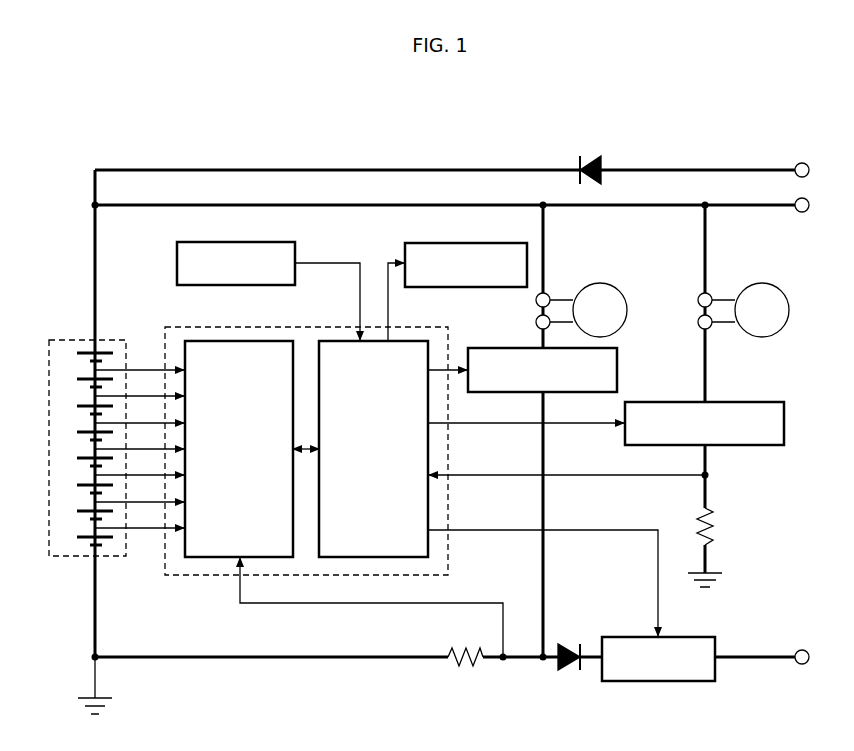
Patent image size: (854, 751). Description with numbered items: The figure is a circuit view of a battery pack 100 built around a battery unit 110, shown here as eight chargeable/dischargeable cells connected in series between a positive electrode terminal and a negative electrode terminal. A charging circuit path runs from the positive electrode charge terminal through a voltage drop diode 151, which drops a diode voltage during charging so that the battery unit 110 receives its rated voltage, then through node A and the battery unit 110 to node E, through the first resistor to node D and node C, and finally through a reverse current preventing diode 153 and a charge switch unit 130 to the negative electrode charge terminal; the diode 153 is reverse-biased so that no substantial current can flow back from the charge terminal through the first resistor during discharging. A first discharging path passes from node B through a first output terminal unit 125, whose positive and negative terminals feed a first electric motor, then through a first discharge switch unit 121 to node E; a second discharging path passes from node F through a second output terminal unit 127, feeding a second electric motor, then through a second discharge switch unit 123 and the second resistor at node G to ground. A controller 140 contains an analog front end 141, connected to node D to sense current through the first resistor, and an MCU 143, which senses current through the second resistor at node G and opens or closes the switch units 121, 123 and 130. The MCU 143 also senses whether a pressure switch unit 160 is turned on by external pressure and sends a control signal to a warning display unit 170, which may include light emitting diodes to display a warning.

The battery pack 100 is at (89, 142).
The battery unit 110 is at (60, 340).
The first discharge switch unit 121 is at (618, 370).
The second discharge switch unit 123 is at (730, 402).
The first output terminal unit 125 is at (552, 291).
The second output terminal unit 127 is at (698, 291).
The charge switch unit 130 is at (623, 637).
The controller 140 is at (305, 327).
The analog front end (AFE) 141 is at (239, 341).
The MCU 143 is at (410, 341).
The voltage drop diode 151 is at (600, 156).
The reverse current preventing diode 153 is at (558, 671).
The pressure switch unit 160 is at (234, 242).
The warning display unit 170 is at (463, 243).